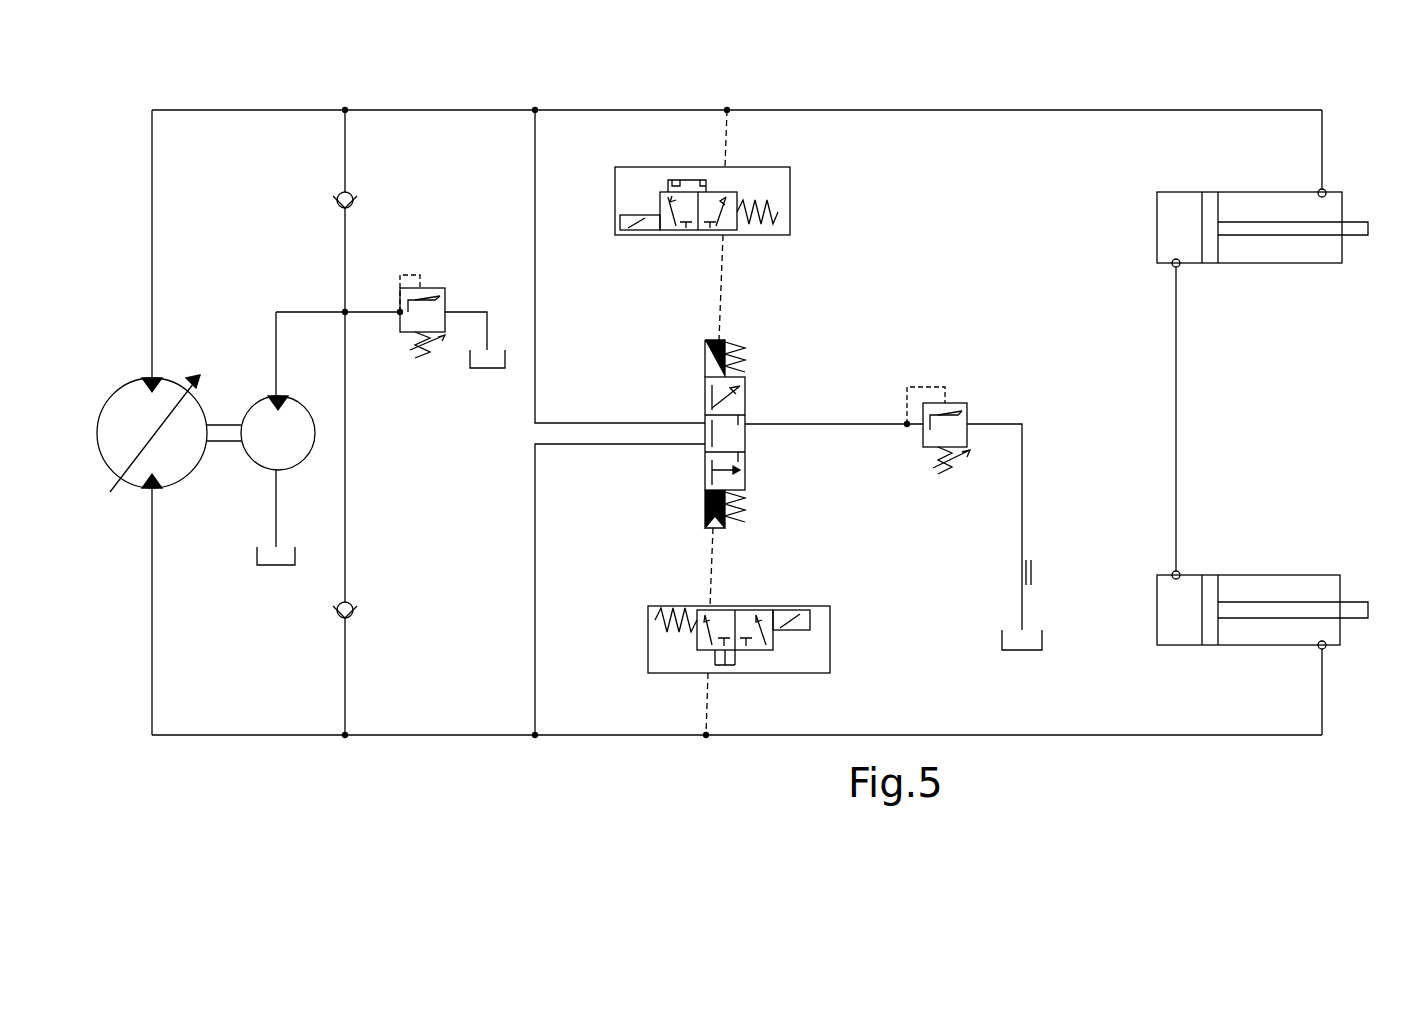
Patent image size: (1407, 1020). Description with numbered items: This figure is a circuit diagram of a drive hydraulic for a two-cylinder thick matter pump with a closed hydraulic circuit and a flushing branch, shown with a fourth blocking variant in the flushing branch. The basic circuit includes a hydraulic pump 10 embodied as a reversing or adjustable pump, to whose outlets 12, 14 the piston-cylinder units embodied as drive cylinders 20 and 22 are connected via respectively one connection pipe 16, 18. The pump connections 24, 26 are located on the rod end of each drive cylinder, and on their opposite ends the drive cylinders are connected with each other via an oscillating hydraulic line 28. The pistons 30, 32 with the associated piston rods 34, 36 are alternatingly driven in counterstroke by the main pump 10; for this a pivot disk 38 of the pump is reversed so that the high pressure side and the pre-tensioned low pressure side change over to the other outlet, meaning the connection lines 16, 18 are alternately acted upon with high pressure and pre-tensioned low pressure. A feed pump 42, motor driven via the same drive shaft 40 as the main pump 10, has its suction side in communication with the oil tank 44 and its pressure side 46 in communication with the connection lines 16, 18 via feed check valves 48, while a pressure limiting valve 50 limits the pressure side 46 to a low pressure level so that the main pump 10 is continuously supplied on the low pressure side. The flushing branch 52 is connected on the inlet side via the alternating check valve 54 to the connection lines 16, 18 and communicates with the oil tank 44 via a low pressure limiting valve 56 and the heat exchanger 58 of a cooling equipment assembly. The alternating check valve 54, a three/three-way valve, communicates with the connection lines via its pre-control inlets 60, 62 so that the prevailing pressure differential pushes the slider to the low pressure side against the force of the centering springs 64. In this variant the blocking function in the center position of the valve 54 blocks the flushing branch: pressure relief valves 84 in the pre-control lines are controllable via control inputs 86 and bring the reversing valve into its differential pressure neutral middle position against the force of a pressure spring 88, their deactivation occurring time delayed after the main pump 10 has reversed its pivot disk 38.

The hydraulic pump 10 is at (163, 392).
The outlet 12 is at (152, 377).
The outlet 14 is at (151, 489).
The connection pipe 16 is at (262, 110).
The connection pipe 18 is at (200, 733).
The drive cylinder 20 is at (1185, 192).
The drive cylinder 22 is at (1258, 575).
The pump connection 24 is at (1326, 190).
The pump connection 26 is at (1327, 650).
The oscillating hydraulic line 28 is at (1179, 442).
The piston 30 is at (1210, 264).
The piston 32 is at (1210, 578).
The piston rod 34 is at (1302, 240).
The piston rod 36 is at (1298, 604).
The pivot disk 38 is at (192, 378).
The drive shaft 40 is at (228, 444).
The feed pump 42 is at (292, 432).
The oil tank 44 is at (492, 370).
The pressure side 46 is at (276, 395).
The feed check valve 48 is at (354, 193).
The pressure limiting valve 50 is at (437, 315).
The flushing branch 52 is at (852, 418).
The alternating check valve 54 is at (748, 413).
The low pressure limiting valve 56 is at (955, 410).
The heat exchanger 58 is at (1033, 572).
The pre-control inlet 60 is at (706, 362).
The pre-control inlet 62 is at (708, 512).
The centering spring 64 is at (745, 354).
The pressure relief valve 84 is at (737, 228).
The control input 86 is at (652, 230).
The pressure spring 88 is at (777, 213).